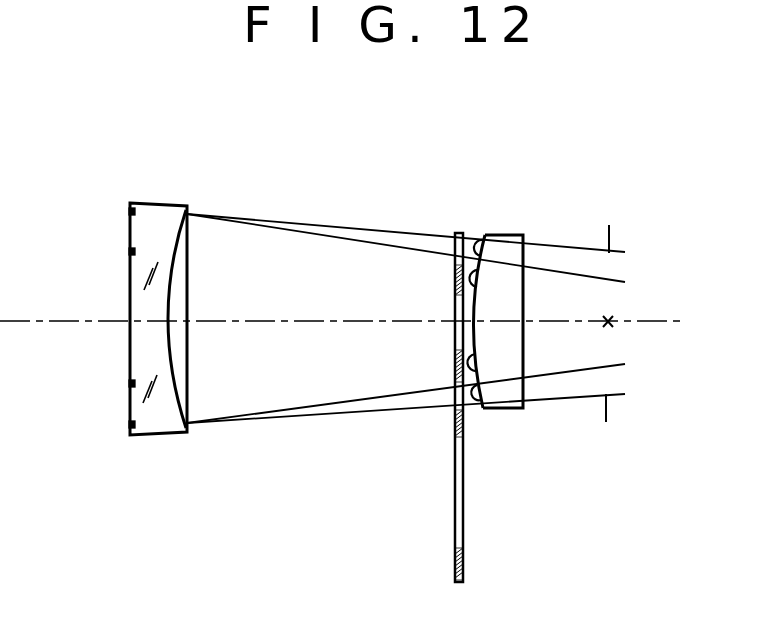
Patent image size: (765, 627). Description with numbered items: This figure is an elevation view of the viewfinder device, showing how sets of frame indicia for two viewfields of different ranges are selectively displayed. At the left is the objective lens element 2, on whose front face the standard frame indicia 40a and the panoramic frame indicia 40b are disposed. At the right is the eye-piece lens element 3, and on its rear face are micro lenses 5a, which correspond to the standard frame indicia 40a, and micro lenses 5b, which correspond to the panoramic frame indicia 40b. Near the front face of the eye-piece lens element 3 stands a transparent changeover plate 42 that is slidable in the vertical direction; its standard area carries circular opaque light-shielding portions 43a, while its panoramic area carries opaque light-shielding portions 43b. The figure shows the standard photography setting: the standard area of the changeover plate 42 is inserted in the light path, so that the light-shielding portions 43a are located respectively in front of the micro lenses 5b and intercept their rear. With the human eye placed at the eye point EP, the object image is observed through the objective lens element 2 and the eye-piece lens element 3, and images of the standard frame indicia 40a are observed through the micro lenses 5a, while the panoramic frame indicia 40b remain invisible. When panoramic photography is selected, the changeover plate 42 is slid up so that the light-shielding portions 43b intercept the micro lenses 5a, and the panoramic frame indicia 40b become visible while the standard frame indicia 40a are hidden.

The objective lens element 2 is at (168, 370).
The eye-piece lens element 3 is at (505, 407).
The micro lenses 5a is at (482, 248).
The micro lenses 5b is at (480, 362).
The standard frame indicia 40a is at (128, 212).
The panoramic frame indicia 40b is at (128, 252).
The changeover plate 42 is at (466, 491).
The light-shielding portions 43a is at (455, 362).
The light-shielding portions 43b is at (455, 430).
The eye point EP is at (616, 323).